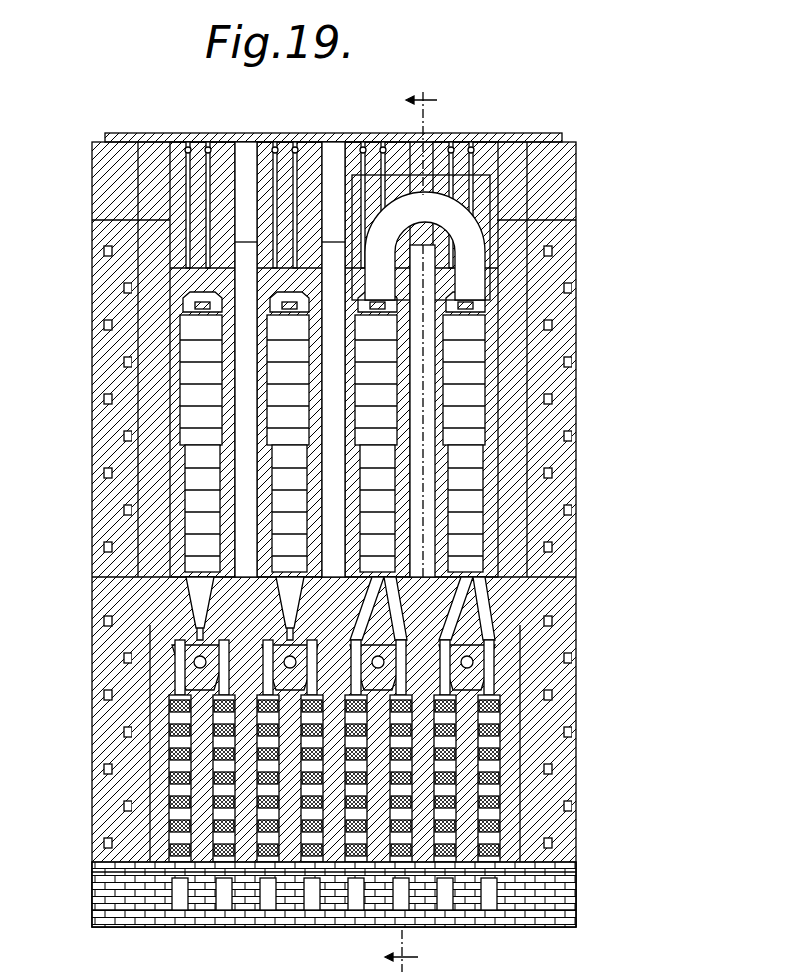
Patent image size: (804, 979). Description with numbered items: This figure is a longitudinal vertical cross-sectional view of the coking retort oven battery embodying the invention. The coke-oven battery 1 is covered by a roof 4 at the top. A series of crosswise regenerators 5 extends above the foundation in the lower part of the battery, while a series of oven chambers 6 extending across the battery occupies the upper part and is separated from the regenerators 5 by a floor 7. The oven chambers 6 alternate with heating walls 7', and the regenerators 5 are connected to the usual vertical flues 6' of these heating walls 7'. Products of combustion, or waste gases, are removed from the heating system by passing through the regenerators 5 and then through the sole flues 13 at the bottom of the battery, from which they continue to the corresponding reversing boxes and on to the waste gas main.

The coke-oven battery 1 is at (577, 240).
The roof 4 is at (513, 148).
The crosswise regenerators 5 is at (218, 752).
The oven chambers 6 is at (330, 359).
The vertical flues 6' is at (335, 443).
The floor 7 is at (421, 519).
The heating walls 7' is at (336, 359).
The sole flues 13 is at (268, 908).